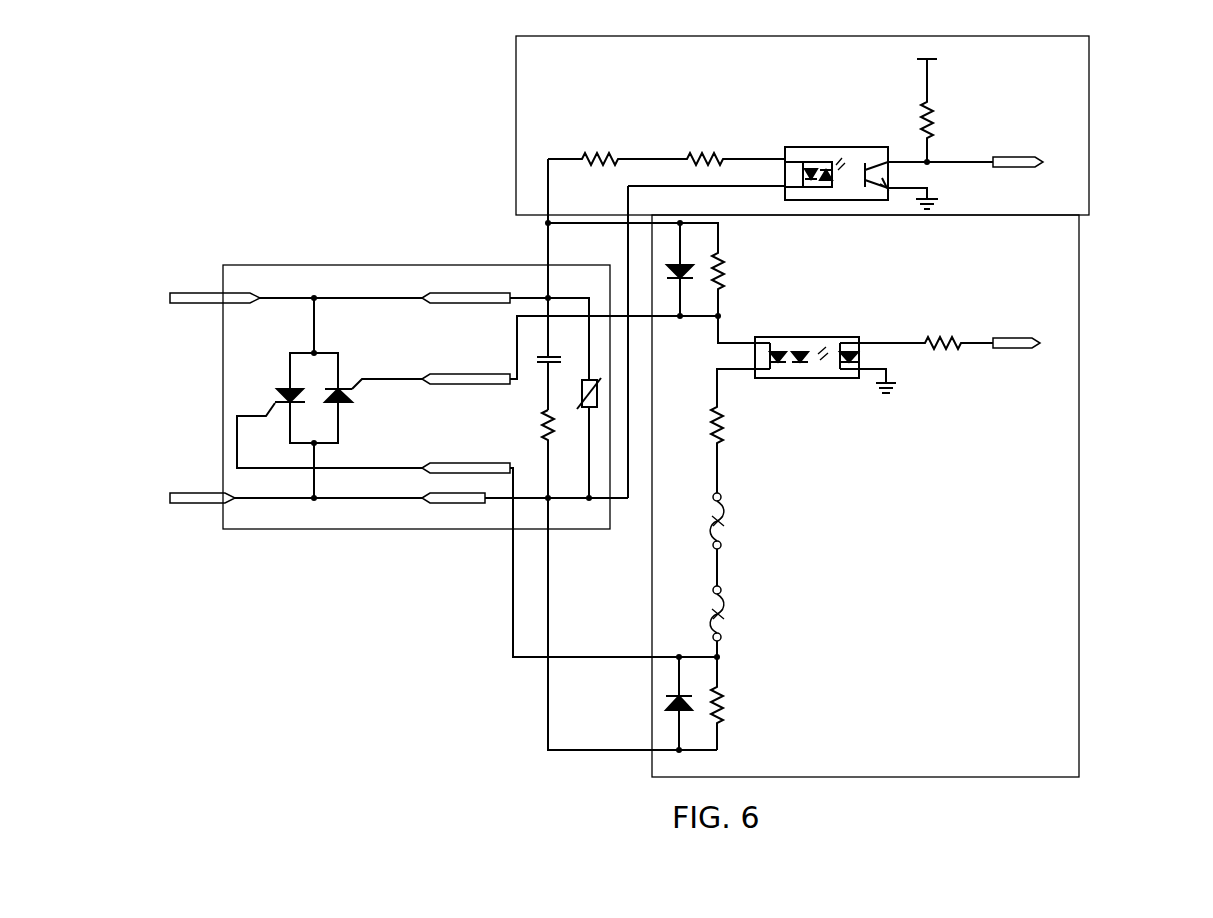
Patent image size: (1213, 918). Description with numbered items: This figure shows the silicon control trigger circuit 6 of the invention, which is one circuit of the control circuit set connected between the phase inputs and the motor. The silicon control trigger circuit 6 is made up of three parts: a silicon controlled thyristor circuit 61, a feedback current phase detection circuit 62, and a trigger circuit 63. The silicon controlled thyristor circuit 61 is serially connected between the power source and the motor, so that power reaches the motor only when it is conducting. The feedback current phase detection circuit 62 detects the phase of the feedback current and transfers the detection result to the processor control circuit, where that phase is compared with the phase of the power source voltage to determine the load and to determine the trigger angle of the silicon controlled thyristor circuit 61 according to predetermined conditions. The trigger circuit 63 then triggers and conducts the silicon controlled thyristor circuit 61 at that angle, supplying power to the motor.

The silicon control trigger circuit 6 is at (338, 166).
The silicon controlled SCR circuit 61 is at (320, 265).
The feedback current phase detection circuit 62 is at (1090, 109).
The trigger circuit 63 is at (1080, 497).